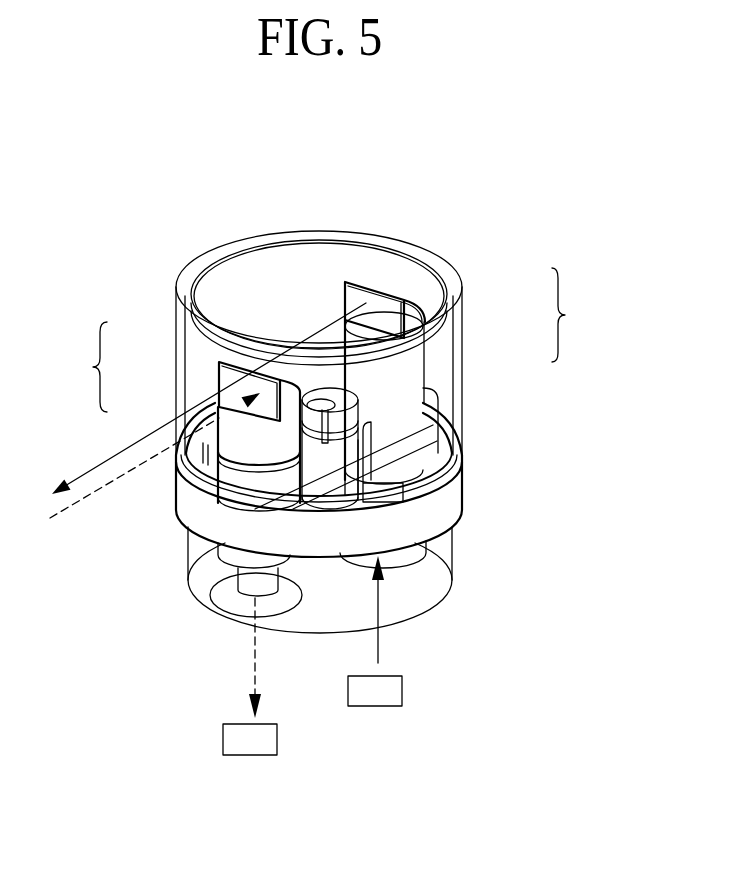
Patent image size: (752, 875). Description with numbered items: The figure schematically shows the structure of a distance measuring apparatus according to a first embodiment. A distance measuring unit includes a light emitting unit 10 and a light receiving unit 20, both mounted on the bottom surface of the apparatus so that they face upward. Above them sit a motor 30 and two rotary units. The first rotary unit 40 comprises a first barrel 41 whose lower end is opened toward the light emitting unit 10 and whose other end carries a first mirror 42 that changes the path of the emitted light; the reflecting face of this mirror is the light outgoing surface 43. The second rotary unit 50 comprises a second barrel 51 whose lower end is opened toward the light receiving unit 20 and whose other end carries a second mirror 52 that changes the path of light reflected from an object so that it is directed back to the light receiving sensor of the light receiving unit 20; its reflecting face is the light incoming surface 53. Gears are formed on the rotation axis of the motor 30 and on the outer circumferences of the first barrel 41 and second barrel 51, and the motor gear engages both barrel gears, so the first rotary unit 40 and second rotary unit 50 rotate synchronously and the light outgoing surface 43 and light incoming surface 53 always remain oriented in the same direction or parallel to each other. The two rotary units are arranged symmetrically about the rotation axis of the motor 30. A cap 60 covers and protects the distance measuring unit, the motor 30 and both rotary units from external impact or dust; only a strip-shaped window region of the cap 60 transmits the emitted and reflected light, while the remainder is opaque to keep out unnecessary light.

The light emitting unit 10 is at (393, 691).
The light receiving unit 20 is at (268, 737).
The motor 30 is at (380, 442).
The first rotary unit 40 is at (471, 328).
The first barrel 41 is at (417, 366).
The first mirror 42 is at (448, 246).
The light outgoing surface 43 is at (383, 310).
The second rotary unit 50 is at (181, 351).
The second barrel 51 is at (238, 428).
The second mirror 52 is at (194, 306).
The light incoming surface 53 is at (237, 380).
The cap 60 is at (428, 259).